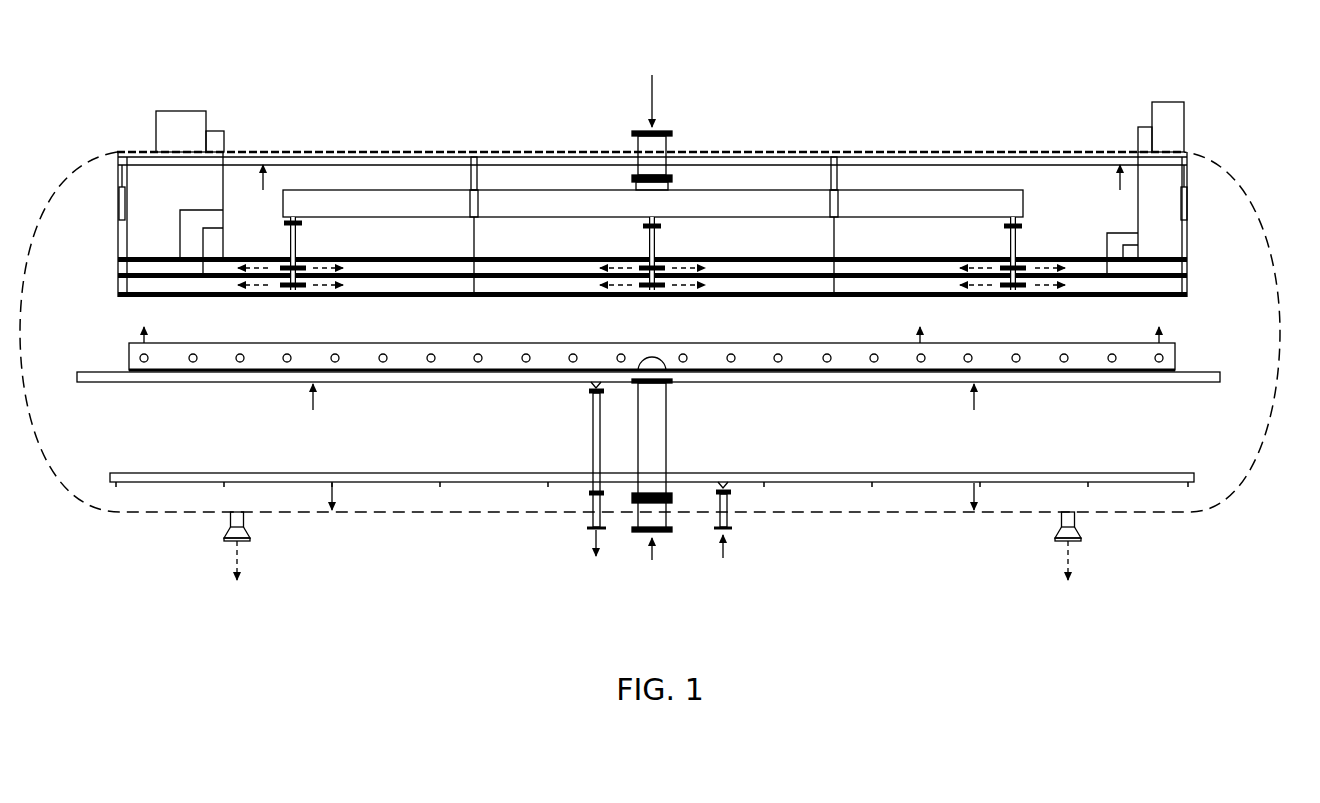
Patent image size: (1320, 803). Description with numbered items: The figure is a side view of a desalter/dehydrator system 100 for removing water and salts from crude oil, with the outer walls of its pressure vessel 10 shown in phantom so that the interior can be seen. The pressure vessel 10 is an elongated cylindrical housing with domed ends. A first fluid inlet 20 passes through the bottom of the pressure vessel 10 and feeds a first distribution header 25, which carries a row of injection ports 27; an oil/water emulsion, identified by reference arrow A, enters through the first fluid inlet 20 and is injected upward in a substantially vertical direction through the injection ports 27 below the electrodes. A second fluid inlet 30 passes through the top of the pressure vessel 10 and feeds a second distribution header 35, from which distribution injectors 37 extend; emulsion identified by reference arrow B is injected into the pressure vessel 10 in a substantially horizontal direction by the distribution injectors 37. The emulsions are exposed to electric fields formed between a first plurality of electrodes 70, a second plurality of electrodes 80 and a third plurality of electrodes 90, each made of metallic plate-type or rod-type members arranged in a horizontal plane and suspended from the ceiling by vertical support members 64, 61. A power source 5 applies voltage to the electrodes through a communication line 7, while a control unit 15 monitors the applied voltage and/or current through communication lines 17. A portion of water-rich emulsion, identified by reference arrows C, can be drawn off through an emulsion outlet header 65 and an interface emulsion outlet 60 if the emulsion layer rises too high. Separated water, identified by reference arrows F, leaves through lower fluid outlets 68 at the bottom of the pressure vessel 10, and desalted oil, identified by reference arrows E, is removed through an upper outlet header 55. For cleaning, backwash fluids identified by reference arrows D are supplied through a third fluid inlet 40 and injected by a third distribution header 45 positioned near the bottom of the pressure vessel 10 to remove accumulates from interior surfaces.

The desalter/dehydrator system 100 is at (1035, 85).
The pressure vessel 10 is at (1250, 185).
The power source 5 is at (172, 111).
The communication line 7 is at (224, 138).
The control unit 15 is at (1184, 126).
The communication lines 17 is at (1138, 137).
The upper outlet header 55 is at (508, 160).
The second fluid inlet 30 is at (668, 143).
The second distribution header 35 is at (1015, 198).
The distribution injectors 37 is at (1020, 245).
The vertical support member 61 is at (118, 172).
The vertical support member 64 is at (126, 205).
The first plurality of electrodes 70 is at (1150, 257).
The second plurality of electrodes 80 is at (1160, 275).
The third plurality of electrodes 90 is at (1150, 297).
The first distribution header 25 is at (652, 359).
The injection ports 27 is at (1018, 362).
The emulsion outlet header 65 is at (400, 382).
The third distribution header 45 is at (890, 473).
The interface emulsion outlet 60 is at (593, 518).
The first fluid inlet 20 is at (668, 520).
The third fluid inlet 40 is at (730, 518).
The lower fluid outlets 68 is at (230, 520).
The oil/water emulsion flow A is at (920, 340).
The oil/water emulsion flow B is at (652, 85).
The interface emulsion flow C is at (974, 400).
The cleaning/backwash fluid flow D is at (976, 490).
The desalted/dehydrated oil flow E is at (265, 178).
The separated water flow F is at (238, 555).